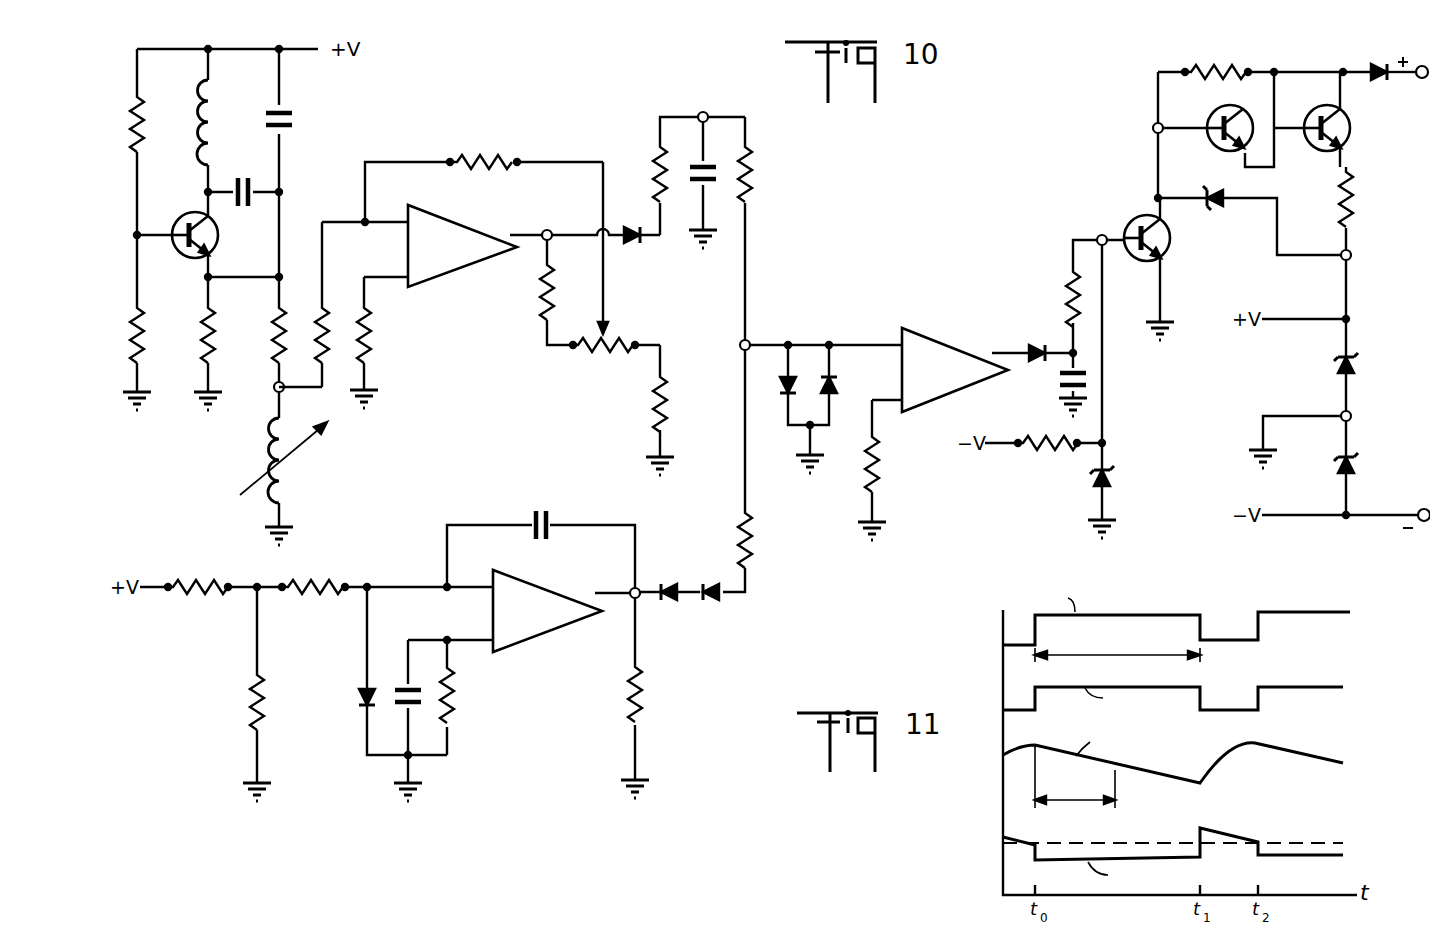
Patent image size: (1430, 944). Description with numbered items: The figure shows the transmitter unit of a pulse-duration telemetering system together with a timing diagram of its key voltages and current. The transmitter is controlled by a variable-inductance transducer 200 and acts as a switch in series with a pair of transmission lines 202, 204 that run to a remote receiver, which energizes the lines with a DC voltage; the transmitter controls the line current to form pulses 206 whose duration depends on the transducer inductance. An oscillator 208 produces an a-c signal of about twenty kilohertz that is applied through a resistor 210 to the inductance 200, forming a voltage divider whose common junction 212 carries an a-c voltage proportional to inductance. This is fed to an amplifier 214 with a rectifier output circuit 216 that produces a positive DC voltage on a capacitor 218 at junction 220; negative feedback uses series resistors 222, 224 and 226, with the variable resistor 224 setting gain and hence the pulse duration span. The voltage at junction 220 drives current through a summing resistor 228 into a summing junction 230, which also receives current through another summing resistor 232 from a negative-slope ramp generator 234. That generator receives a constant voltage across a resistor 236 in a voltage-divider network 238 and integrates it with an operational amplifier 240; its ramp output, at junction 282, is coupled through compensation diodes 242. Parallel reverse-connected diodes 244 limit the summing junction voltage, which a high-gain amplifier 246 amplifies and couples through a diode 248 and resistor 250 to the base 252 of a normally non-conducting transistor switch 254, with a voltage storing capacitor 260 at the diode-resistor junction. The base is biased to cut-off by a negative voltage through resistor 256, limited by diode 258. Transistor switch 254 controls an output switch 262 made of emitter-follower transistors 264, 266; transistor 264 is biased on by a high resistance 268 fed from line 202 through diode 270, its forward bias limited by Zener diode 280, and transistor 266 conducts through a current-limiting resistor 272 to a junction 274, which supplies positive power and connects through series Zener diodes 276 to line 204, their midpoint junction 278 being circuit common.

In FIG. 10, the variable-inductance transducer 200 is at (277, 456).
In FIG. 10, the transmission line 202 is at (1410, 80).
In FIG. 10, the transmission line 204 is at (1398, 496).
In FIG. 11, the pulses 206 is at (1122, 612).
In FIG. 10, the oscillator 208 is at (266, 247).
In FIG. 10, the resistor 210 is at (277, 324).
In FIG. 10, the common junction 212 is at (273, 388).
In FIG. 10, the amplifier 214 is at (460, 260).
In FIG. 10, the rectifier output circuit 216 is at (636, 184).
In FIG. 10, the capacitor 218 is at (700, 187).
In FIG. 10, the junction 220 is at (706, 113).
In FIG. 11, the junction 220 is at (1017, 707).
In FIG. 10, the resistor 222 is at (545, 292).
In FIG. 10, the variable resistor 224 is at (584, 354).
In FIG. 10, the resistor 226 is at (478, 160).
In FIG. 10, the summing resistor 228 is at (751, 162).
In FIG. 10, the summing junction 230 is at (740, 345).
In FIG. 10, the summing resistor 232 is at (742, 530).
In FIG. 10, the negative-slope ramp generator 234 is at (541, 633).
In FIG. 10, the resistor 236 is at (263, 688).
In FIG. 10, the voltage-divider network 238 is at (212, 650).
In FIG. 10, the operational amplifier 240 is at (540, 623).
In FIG. 10, the compensation diodes 242 is at (742, 655).
In FIG. 10, the parallel reverse-connected diodes 244 is at (828, 422).
In FIG. 10, the high-gain amplifier 246 is at (950, 383).
In FIG. 10, the diode 248 is at (1036, 345).
In FIG. 10, the resistor 250 is at (1070, 282).
In FIG. 10, the base 252 is at (1131, 262).
In FIG. 11, the base 252 is at (1015, 835).
In FIG. 10, the transistor switch 254 is at (1143, 212).
In FIG. 10, the resistor 256 is at (1046, 457).
In FIG. 10, the diode 258 is at (1094, 480).
In FIG. 10, the voltage storing capacitor 260 is at (1064, 386).
In FIG. 10, the output switch 262 is at (1258, 126).
In FIG. 10, the emitter-follower transistor 264 is at (1210, 129).
In FIG. 10, the emitter-follower transistor 266 is at (1310, 123).
In FIG. 10, the high resistance 268 is at (1195, 67).
In FIG. 10, the diode 270 is at (1369, 66).
In FIG. 10, the current-limiting resistor 272 is at (1375, 188).
In FIG. 10, the junction 274 is at (1353, 256).
In FIG. 10, the Zener diodes 276 is at (1353, 461).
In FIG. 10, the junction 278 is at (1341, 413).
In FIG. 10, the Zener diode 280 is at (1223, 208).
In FIG. 10, the junction 282 is at (631, 601).
In FIG. 11, the junction 282 is at (1018, 750).